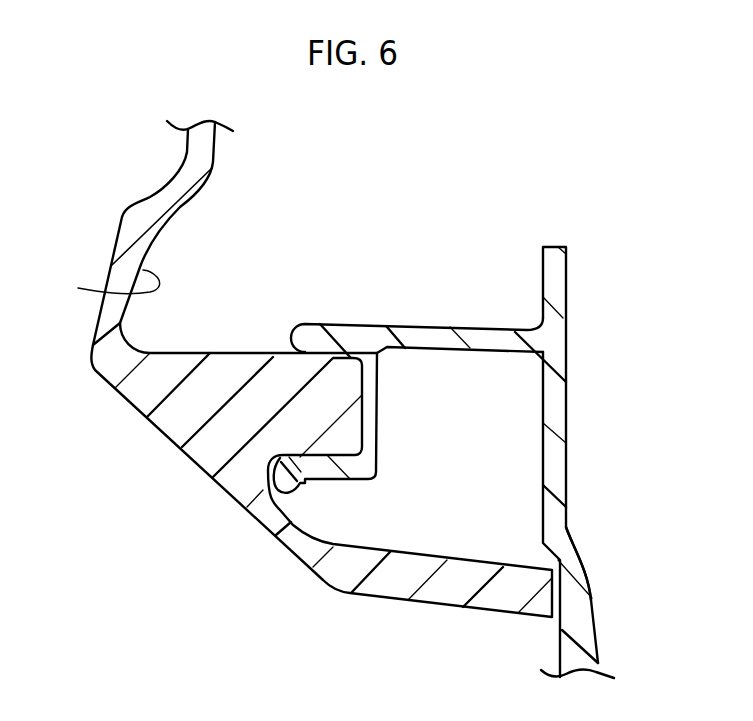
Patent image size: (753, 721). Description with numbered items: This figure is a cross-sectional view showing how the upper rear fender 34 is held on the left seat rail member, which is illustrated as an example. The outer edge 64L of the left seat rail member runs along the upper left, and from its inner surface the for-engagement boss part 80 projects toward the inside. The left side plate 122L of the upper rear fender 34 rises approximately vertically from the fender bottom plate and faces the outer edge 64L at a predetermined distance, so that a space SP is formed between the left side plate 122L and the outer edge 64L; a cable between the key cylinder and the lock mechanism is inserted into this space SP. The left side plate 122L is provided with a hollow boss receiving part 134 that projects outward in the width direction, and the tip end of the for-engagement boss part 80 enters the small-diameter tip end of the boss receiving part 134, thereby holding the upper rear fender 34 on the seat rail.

The outer edge 64L is at (137, 223).
The space SP is at (105, 285).
The for-engagement boss part 80 is at (327, 398).
The boss receiving part 134 is at (428, 342).
The left side plate 122L is at (553, 417).
The upper rear fender 34 is at (595, 580).